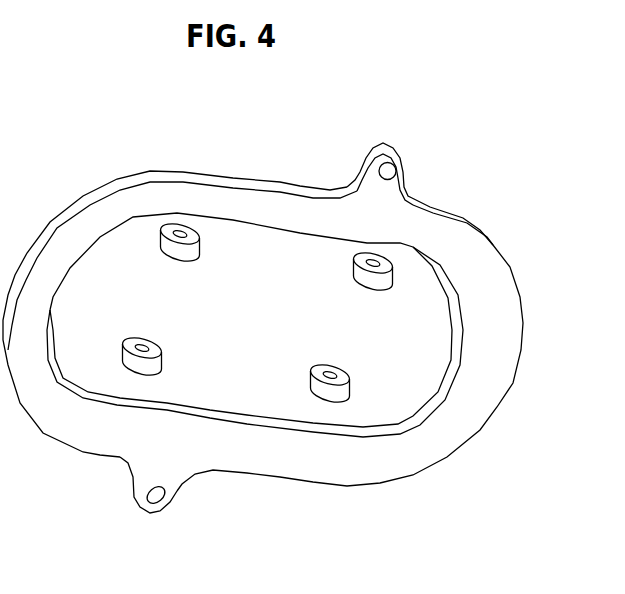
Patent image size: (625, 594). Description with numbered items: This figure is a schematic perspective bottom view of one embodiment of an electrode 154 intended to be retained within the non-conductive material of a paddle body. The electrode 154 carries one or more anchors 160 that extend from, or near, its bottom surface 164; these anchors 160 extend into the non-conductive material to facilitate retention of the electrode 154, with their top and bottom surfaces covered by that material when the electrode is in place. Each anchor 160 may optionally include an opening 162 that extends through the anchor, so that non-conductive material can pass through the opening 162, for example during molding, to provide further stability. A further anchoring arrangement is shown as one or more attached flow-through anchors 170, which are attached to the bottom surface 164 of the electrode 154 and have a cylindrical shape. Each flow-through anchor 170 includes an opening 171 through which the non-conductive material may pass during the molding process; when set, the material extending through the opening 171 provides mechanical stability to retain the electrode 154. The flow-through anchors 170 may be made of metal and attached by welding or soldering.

The electrode 154 is at (103, 193).
The anchor 160 is at (370, 155).
The opening 162 is at (393, 164).
The bottom surface 164 is at (465, 250).
The flow-through anchor 170 is at (347, 392).
The opening 171 is at (347, 377).